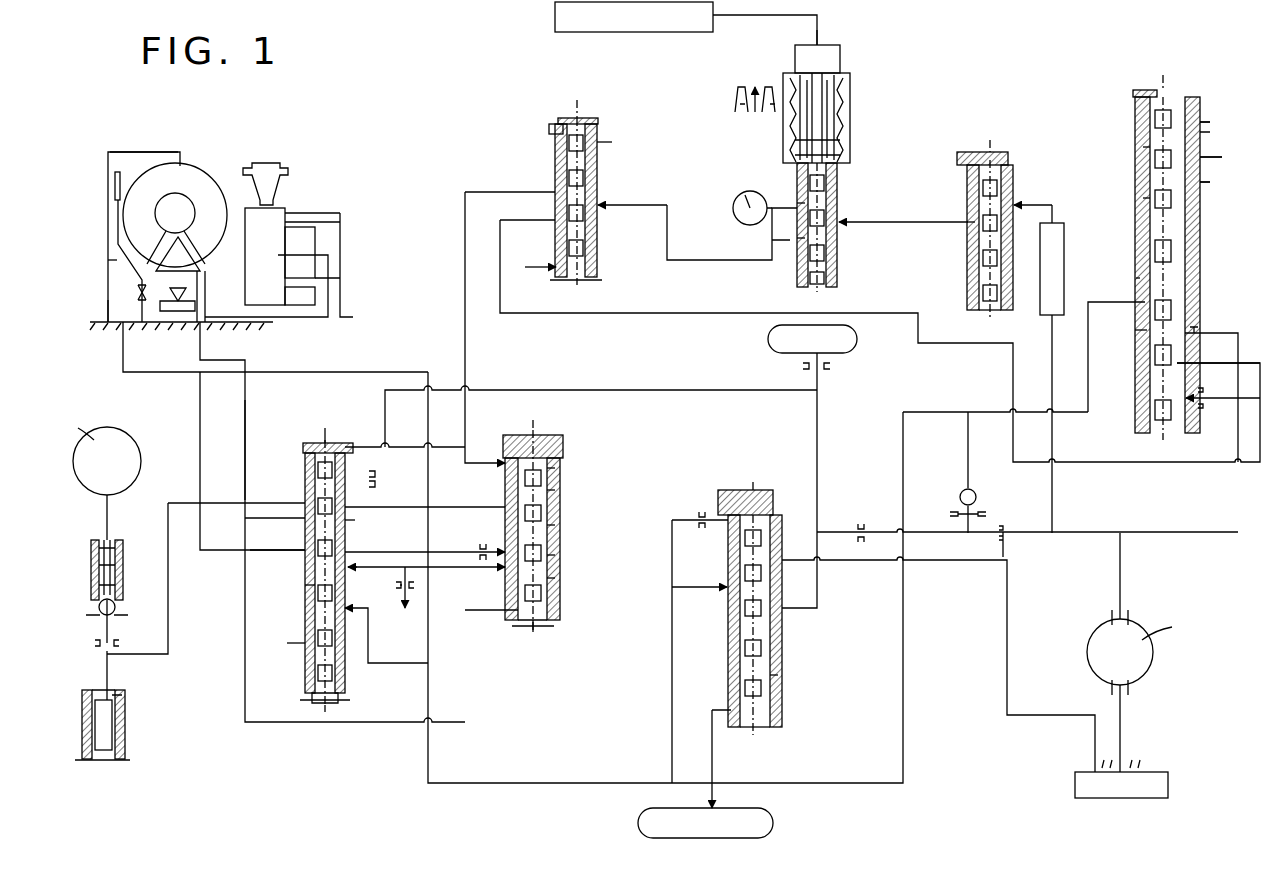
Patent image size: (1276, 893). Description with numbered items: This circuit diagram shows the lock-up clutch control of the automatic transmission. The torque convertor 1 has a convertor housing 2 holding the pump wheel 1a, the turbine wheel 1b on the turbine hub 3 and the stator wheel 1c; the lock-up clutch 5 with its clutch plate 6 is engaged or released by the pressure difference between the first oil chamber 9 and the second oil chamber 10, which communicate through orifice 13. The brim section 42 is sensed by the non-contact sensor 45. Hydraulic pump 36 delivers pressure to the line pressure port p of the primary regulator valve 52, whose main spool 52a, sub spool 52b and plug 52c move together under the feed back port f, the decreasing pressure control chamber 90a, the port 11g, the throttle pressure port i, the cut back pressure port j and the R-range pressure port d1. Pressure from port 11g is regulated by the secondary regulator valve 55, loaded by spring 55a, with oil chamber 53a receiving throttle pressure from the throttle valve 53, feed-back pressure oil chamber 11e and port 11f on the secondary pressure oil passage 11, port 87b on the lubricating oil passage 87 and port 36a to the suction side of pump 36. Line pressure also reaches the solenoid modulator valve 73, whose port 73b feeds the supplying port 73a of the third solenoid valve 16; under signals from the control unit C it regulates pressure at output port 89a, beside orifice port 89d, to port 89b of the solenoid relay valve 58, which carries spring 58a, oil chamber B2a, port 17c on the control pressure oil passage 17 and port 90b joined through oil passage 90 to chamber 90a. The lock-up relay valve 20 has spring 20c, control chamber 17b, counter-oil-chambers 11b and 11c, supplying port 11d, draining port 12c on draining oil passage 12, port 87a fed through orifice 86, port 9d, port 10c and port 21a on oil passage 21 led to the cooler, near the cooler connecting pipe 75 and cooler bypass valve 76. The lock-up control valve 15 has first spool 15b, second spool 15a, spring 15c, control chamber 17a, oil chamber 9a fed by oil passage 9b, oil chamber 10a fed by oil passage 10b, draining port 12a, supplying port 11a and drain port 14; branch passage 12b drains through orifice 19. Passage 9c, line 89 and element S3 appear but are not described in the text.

The torque convertor 1 is at (80, 186).
The pump wheel 1a is at (198, 182).
The turbine wheel 1b is at (135, 210).
The stator wheel 1c is at (188, 258).
The convertor housing 2 is at (107, 304).
The turbine hub 3 is at (160, 332).
The lock-up clutch 5 is at (113, 178).
The clutch plate 6 is at (117, 228).
The first oil chamber 9 is at (112, 258).
The oil chamber 9a is at (506, 507).
The oil passage 9b is at (312, 372).
The passage 9c is at (200, 438).
The port 9d is at (300, 548).
The second oil chamber 10 is at (150, 152).
The oil chamber 10a is at (518, 622).
The oil passage 10b is at (245, 432).
The port 10c is at (300, 501).
The oil passage 11 is at (526, 783).
The supplying port 11a is at (558, 556).
The first counter-oil-chamber 11b is at (348, 690).
The second counter-oil chamber 11c is at (350, 612).
The supplying port 11d is at (346, 524).
The feed-back pressure oil chamber 11e is at (750, 520).
The port 11f is at (730, 580).
The port 11g is at (1140, 295).
The draining hydraulic pressure oil passage 12 is at (384, 568).
The draining oil port 12a is at (512, 570).
The oil passage 12b is at (414, 590).
The draining port 12c is at (350, 570).
The orifice 13 is at (136, 291).
The drain port 14 is at (558, 580).
The lock-up control valve 15 is at (564, 430).
The second spool 15a is at (558, 528).
The first spool 15b is at (560, 493).
The spring 15c is at (540, 622).
The third solenoid valve 16 is at (857, 125).
The control pressure oil passage 17 is at (465, 262).
The control chamber 17a is at (555, 470).
The control chamber 17b is at (338, 440).
The port 17c is at (556, 190).
The orifice 19 is at (410, 600).
The lock-up relay valve 20 is at (318, 440).
The spring 20c is at (305, 585).
The oil passage 21 is at (168, 586).
The port 21a is at (300, 485).
The hydraulic pump 36 is at (1094, 621).
The port 36a is at (773, 545).
The brim section 42 is at (256, 270).
The non-contact sensor 45 is at (288, 180).
The primary regulator valve 52 is at (1127, 115).
The main spool 52a is at (1008, 206).
The sub spool 52b is at (1143, 198).
The plug 52c is at (1143, 147).
The throttle valve 53 is at (774, 820).
The oil chamber 53a is at (733, 715).
The secondary regulator valve 55 is at (766, 478).
The spring 55a is at (778, 674).
The solenoid relay valve 58 is at (588, 98).
The spring 58a is at (600, 158).
The solenoid modulator valve 73 is at (1018, 162).
The supplying port 73a is at (840, 224).
The port 73b is at (972, 222).
The cooler connecting pipe 75 is at (86, 575).
The cooler bypass valve 76 is at (82, 700).
The orifice 86 is at (380, 478).
The lubricating hydraulic pressure oil passage 87 is at (648, 390).
The port 87a is at (345, 466).
The port 87b is at (782, 624).
The pilot passage 89 is at (700, 260).
The output port 89a is at (797, 203).
The port 89b is at (600, 198).
The orifice port 89d is at (797, 238).
The oil passage 90 is at (690, 304).
The pressure decreasing control chamber 90a is at (1188, 365).
The port 90b is at (556, 220).
The oil chamber B2a is at (552, 270).
The control unit C is at (668, 33).
The pressure sensor S3 is at (752, 208).
The R-range pressure port d1 is at (1192, 122).
The throttle pressure port i is at (1215, 158).
The cut back pressure port j is at (1210, 182).
The line pressure port p is at (1196, 328).
The feed back port f is at (1190, 400).